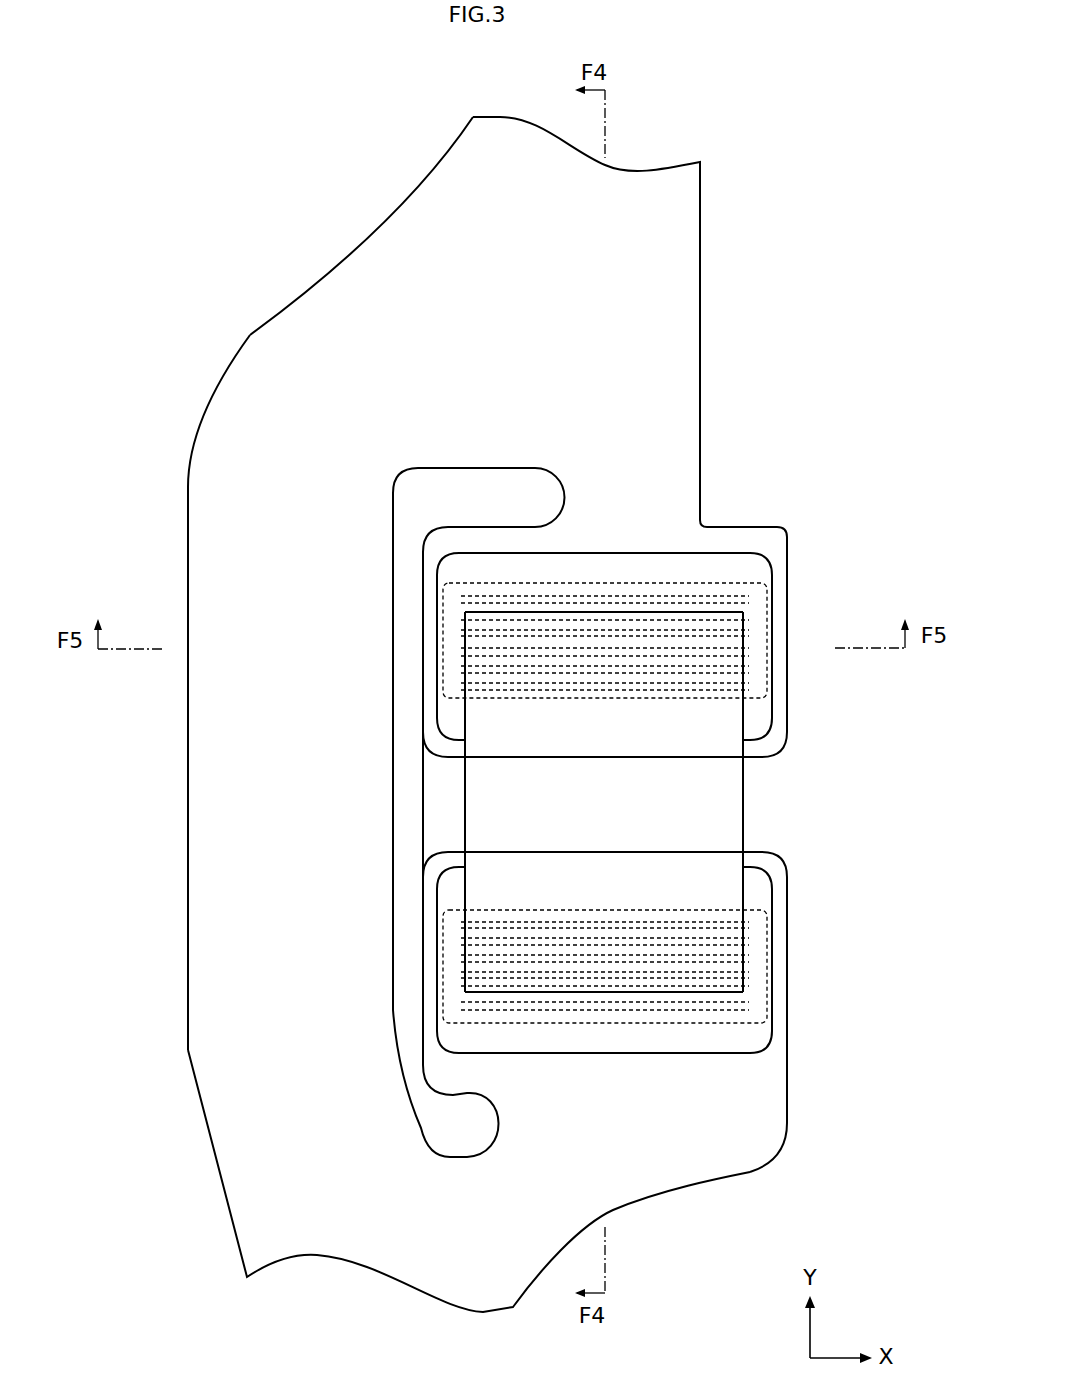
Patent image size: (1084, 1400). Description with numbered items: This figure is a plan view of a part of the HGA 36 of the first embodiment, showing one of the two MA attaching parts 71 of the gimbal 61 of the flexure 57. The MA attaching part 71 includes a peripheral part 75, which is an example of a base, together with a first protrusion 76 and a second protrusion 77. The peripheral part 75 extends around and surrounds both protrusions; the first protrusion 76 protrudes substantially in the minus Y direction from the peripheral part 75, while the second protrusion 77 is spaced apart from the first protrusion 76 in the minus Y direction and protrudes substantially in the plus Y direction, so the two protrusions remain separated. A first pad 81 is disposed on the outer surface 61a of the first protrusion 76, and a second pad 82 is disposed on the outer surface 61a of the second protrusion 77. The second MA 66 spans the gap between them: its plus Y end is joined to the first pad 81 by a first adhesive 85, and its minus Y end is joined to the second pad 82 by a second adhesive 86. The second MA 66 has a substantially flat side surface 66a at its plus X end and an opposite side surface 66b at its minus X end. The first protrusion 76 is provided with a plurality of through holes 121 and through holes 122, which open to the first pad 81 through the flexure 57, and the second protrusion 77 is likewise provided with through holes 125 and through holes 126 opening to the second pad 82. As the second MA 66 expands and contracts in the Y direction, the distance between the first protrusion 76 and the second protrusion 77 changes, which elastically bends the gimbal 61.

The HGA 36 is at (286, 96).
The flexure 57 is at (394, 225).
The gimbal 61 is at (434, 714).
The MA attaching part 71 is at (434, 714).
The outer surface 61a is at (325, 328).
The peripheral part 75 is at (188, 469).
The first protrusion 76 is at (787, 532).
The second protrusion 77 is at (787, 1078).
The first adhesive 85 is at (697, 567).
The second adhesive 86 is at (673, 1040).
The first pad 81 is at (720, 583).
The second pad 82 is at (713, 1023).
The second MA 66 is at (746, 800).
The side surface 66a is at (745, 770).
The side surface 66b is at (465, 796).
The through holes 121 is at (765, 688).
The through holes 122 is at (768, 632).
The through holes 125 is at (768, 958).
The through holes 126 is at (765, 1008).